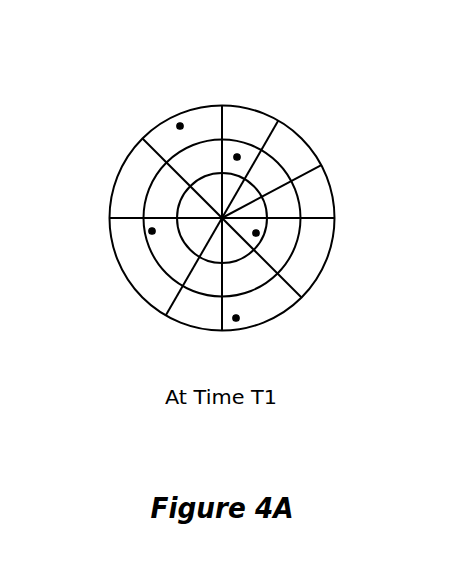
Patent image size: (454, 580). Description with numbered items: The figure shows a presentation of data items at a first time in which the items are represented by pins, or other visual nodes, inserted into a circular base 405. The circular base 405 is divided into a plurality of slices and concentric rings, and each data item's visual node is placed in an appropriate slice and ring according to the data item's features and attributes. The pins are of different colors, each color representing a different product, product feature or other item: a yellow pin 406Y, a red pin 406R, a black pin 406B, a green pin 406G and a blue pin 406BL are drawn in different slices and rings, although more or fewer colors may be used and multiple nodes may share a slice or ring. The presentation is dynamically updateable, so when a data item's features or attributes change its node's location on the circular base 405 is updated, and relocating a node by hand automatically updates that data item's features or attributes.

The circular base 405 is at (306, 142).
The red pin 406R is at (180, 126).
The black pin 406B is at (237, 157).
The yellow pin 406Y is at (152, 231).
The green pin 406G is at (256, 233).
The blue pin 406BL is at (236, 318).